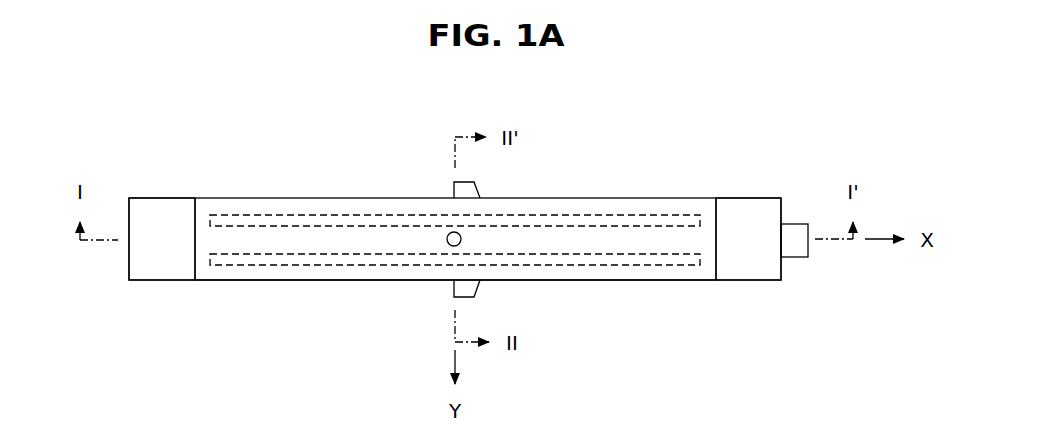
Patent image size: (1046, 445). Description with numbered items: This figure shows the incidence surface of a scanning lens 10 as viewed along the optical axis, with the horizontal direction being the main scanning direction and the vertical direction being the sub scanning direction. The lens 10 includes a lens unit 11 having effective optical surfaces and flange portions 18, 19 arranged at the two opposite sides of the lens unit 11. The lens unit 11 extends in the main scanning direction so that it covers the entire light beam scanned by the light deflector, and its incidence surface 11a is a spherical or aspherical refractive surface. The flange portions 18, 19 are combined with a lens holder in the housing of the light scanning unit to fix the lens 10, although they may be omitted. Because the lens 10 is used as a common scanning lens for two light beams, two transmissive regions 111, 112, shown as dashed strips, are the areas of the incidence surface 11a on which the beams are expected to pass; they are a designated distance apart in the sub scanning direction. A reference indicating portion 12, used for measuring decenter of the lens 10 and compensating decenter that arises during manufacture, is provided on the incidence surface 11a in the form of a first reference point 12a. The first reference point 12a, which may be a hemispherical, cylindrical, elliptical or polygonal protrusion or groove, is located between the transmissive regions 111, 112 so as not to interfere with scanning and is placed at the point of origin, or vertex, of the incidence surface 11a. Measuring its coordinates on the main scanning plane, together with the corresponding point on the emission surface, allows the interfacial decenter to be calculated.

The lens 10 is at (749, 179).
The lens unit 11 is at (601, 344).
The incidence surface 11a is at (582, 275).
The transmissive region 111 is at (249, 215).
The transmissive region 112 is at (313, 253).
The reference indicating portion 12 is at (409, 136).
The first reference point 12a is at (448, 237).
The flange portion 18 is at (165, 275).
The flange portion 19 is at (753, 273).